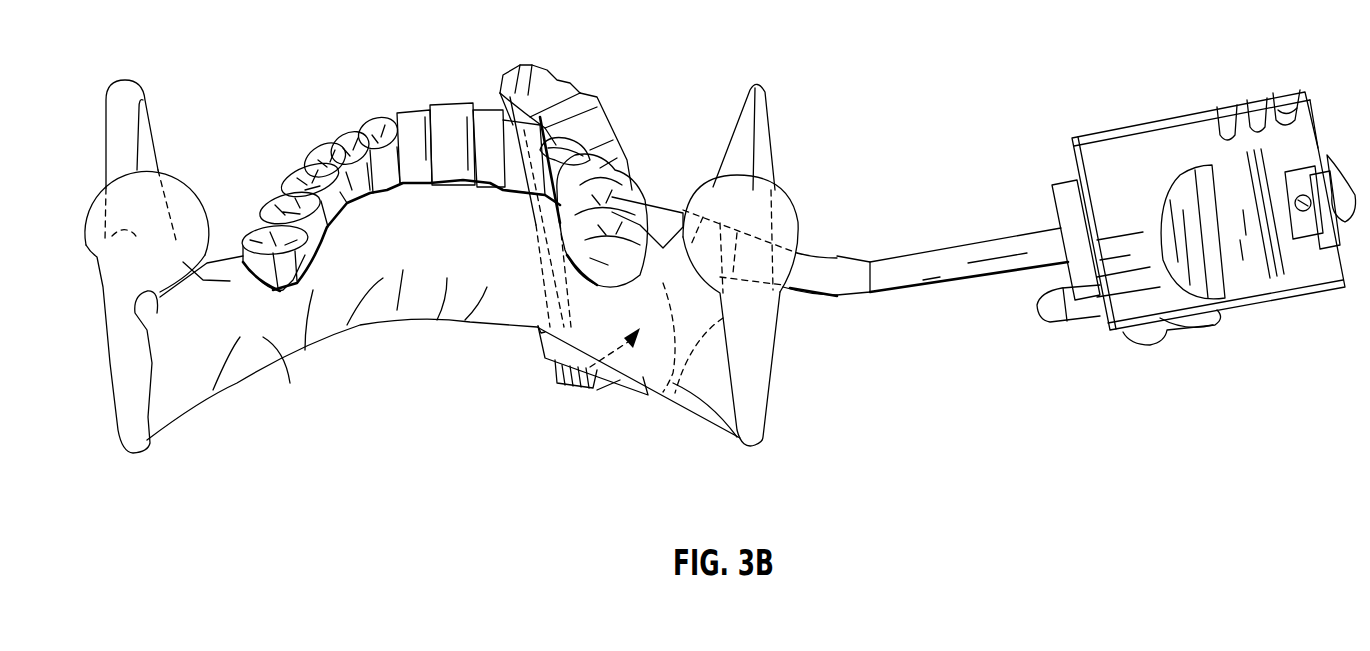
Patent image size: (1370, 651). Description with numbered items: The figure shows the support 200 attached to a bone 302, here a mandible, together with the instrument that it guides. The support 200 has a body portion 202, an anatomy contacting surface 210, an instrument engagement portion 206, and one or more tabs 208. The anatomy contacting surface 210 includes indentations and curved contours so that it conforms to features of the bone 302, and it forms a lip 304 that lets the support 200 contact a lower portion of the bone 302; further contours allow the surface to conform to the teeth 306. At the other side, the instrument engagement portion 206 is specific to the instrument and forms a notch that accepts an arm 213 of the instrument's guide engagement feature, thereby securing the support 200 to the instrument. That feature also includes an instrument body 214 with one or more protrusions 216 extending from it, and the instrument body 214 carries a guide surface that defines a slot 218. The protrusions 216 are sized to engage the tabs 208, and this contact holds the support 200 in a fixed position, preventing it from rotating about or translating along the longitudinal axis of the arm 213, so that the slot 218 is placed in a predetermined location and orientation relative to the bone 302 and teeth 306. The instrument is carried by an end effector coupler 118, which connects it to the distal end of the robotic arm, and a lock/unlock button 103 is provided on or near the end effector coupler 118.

The lock/unlock button 103 is at (1150, 345).
The end effector coupler 118 is at (1158, 63).
The support 200 is at (648, 420).
The body portion 202 is at (665, 212).
The instrument engagement portion 206 is at (765, 185).
The tabs 208 is at (613, 157).
The anatomy contacting surface 210 is at (557, 385).
The arm 213 is at (797, 290).
The instrument body 214 is at (537, 70).
The protrusions 216 is at (597, 115).
The slot 218 is at (510, 107).
The bone 302 is at (263, 337).
The lip 304 is at (623, 387).
The teeth 306 is at (288, 118).